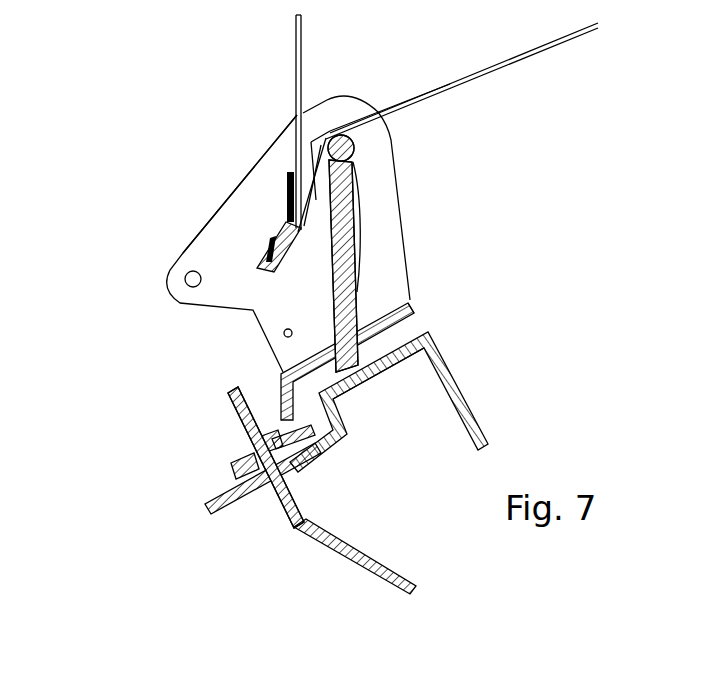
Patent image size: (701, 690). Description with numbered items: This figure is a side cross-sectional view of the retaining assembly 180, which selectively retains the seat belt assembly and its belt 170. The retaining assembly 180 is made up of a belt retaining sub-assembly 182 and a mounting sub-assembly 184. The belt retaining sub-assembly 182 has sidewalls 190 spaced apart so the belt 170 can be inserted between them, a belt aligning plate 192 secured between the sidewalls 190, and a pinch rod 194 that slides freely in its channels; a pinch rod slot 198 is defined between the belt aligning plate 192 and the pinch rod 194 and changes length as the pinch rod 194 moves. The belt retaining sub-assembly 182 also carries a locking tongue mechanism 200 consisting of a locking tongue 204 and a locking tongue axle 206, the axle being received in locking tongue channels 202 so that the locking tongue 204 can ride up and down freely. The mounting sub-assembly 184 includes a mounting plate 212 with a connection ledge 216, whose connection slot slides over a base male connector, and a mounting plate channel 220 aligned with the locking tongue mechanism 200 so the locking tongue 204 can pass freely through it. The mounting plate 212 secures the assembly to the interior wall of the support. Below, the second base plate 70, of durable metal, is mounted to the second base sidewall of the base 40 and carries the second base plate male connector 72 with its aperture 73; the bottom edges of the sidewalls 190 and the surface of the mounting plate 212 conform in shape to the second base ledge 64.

The base 40 is at (333, 474).
The second base ledge 64 is at (222, 489).
The second base plate 70 is at (332, 547).
The second base plate male connector 72 is at (252, 445).
The aperture 73 is at (246, 423).
The belt 170 is at (547, 42).
The retaining assembly 180 is at (178, 250).
The belt retaining sub-assembly 182 is at (402, 230).
The mounting sub-assembly 184 is at (290, 355).
The sidewalls 190 is at (303, 305).
The belt aligning plate 192 is at (287, 190).
The pinch rod 194 is at (265, 252).
The pinch rod slot 198 is at (284, 231).
The locking tongue mechanism 200 is at (366, 300).
The locking tongue channels 202 is at (359, 271).
The locking tongue 204 is at (352, 197).
The locking tongue axle 206 is at (392, 130).
The mounting plate 212 is at (416, 312).
The connection ledge 216 is at (279, 432).
The mounting plate channel 220 is at (375, 333).